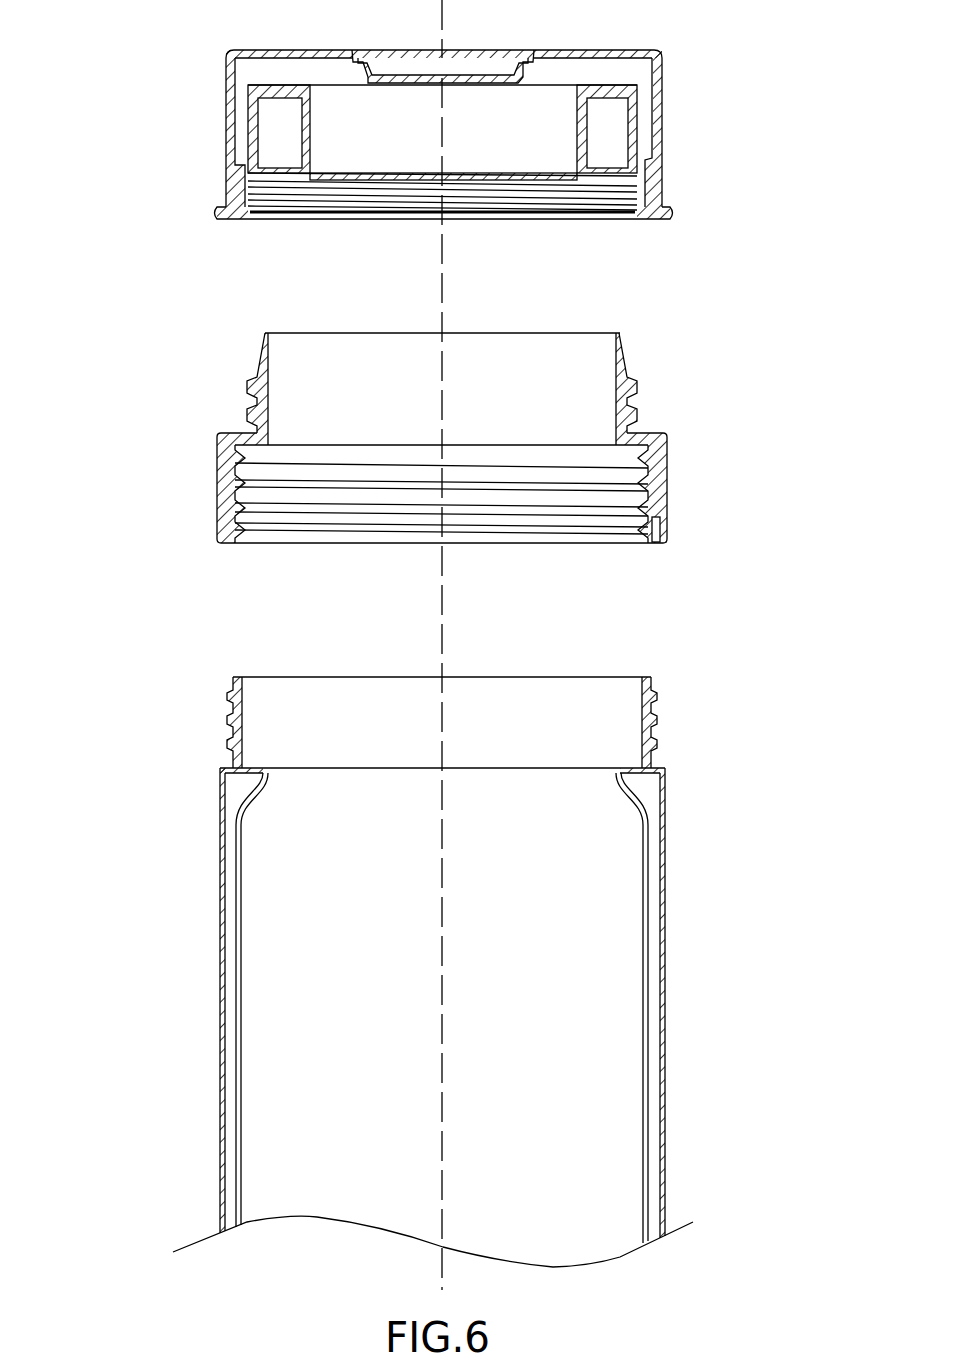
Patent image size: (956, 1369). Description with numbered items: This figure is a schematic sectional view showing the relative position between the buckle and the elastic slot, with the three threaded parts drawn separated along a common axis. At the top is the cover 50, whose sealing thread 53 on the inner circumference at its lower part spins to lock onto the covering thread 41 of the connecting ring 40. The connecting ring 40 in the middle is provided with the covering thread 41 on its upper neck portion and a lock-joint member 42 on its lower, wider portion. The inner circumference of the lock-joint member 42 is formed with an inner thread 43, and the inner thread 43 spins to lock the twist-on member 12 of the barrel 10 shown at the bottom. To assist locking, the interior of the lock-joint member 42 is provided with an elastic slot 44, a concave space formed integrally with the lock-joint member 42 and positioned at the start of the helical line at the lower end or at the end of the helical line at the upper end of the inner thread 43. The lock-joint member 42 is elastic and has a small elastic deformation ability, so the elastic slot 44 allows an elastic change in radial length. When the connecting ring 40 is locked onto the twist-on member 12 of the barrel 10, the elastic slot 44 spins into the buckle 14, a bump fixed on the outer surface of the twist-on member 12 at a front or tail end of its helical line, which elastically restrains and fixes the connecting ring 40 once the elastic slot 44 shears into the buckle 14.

The barrel 10 is at (497, 945).
The twist-on member 12 is at (519, 696).
The buckle 14 is at (655, 747).
The connecting ring 40 is at (424, 471).
The covering thread 41 is at (652, 402).
The lock-joint member 42 is at (667, 473).
The inner thread 43 is at (375, 513).
The elastic slot 44 is at (656, 530).
The cover 50 is at (369, 153).
The sealing thread 53 is at (363, 197).